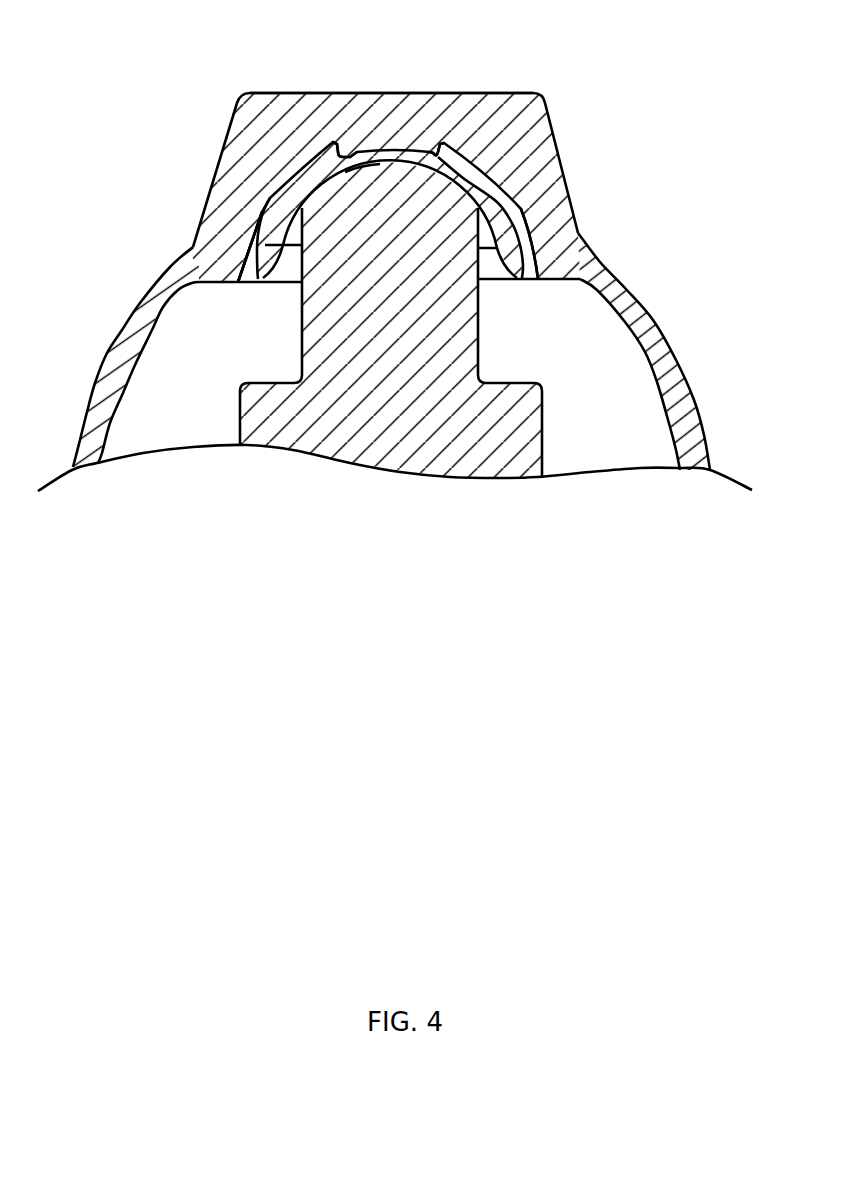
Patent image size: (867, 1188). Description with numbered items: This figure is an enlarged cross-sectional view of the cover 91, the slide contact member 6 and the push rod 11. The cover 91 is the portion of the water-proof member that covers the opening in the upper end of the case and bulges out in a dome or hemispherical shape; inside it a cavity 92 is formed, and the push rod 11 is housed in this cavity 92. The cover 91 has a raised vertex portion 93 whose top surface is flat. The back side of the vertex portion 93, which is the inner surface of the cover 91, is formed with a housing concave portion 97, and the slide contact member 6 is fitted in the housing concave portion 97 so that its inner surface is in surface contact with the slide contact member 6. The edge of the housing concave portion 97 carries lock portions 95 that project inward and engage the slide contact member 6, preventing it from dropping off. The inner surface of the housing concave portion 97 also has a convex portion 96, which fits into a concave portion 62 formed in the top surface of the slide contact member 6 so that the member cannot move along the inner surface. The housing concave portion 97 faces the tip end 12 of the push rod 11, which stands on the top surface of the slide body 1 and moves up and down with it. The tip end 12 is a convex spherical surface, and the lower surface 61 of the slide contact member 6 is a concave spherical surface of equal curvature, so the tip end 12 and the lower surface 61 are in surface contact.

The slide body 1 is at (527, 435).
The slide contact member 6 is at (258, 212).
The lower surface 61 is at (362, 170).
The concave portion 62 is at (345, 156).
The push rod 11 is at (563, 158).
The tip end 12 is at (488, 150).
The cover 91 is at (682, 396).
The cavity 92 is at (615, 352).
The vertex portion 93 is at (415, 97).
The lock portion 95 is at (250, 266).
The convex portion 96 is at (433, 148).
The housing concave portion 97 is at (258, 210).